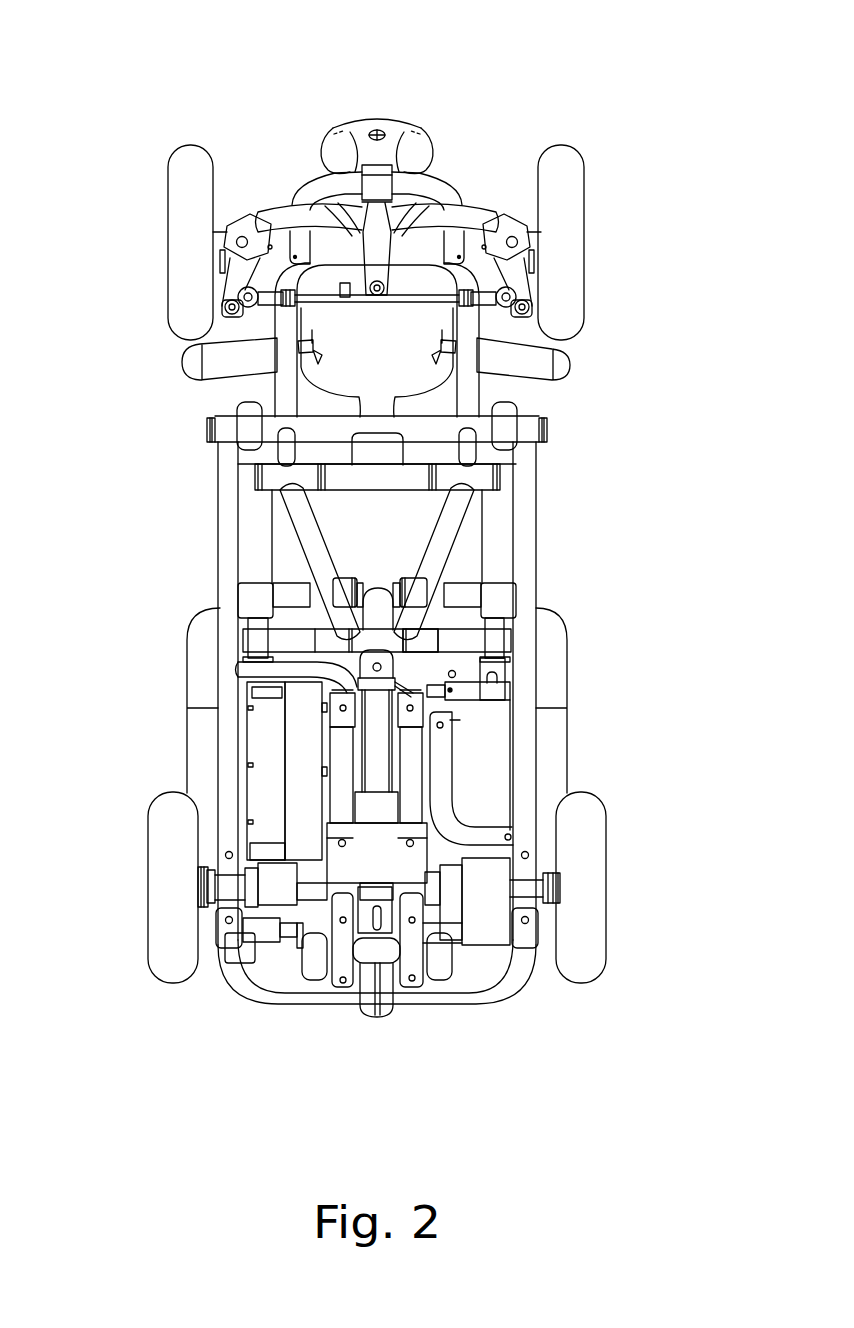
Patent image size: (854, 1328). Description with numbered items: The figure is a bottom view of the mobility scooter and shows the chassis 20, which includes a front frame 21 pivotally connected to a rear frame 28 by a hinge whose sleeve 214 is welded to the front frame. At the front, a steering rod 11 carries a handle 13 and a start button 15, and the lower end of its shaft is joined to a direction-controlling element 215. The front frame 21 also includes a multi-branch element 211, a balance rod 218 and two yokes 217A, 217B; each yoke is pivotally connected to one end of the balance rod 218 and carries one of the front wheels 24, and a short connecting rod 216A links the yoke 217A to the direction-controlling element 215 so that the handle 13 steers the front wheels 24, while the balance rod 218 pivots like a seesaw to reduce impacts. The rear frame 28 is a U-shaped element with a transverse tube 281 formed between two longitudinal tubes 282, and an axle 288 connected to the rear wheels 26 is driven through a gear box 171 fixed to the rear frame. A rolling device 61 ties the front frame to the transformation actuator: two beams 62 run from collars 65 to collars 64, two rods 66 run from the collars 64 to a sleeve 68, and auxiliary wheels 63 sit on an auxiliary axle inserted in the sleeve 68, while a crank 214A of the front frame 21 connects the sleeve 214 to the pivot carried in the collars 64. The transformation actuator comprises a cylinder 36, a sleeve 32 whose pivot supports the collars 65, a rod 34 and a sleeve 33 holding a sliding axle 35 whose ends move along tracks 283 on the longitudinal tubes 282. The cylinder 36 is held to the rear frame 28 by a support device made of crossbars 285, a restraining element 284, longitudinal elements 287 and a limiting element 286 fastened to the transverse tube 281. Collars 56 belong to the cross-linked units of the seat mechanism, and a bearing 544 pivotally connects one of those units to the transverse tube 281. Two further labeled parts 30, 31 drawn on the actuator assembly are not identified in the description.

The steering rod 11 is at (405, 126).
The start button 15 is at (377, 129).
The multi-branch element 211 is at (352, 180).
The balance rod 218 is at (420, 210).
The yoke 217A is at (250, 215).
The yoke 217B is at (507, 227).
The connecting rod 216A is at (353, 288).
The direction-controlling element 215 is at (440, 200).
The front wheels 24 is at (183, 238).
The handle 13 is at (567, 355).
The sleeve 68 is at (377, 418).
The auxiliary wheels 63 is at (510, 410).
The front frame 21 is at (360, 453).
The chassis 20 is at (333, 732).
The sleeve 214 is at (487, 440).
The rear frame 28 is at (340, 761).
The rods 66 is at (465, 453).
The rolling device 61 is at (280, 503).
The collars 64 is at (463, 480).
The crank 214A is at (375, 443).
The beams 62 is at (450, 532).
The longitudinal tubes 282 is at (227, 542).
The collars 56 is at (345, 590).
The sleeve 33 is at (388, 582).
The tracks 283 is at (498, 570).
The sliding axle 35 is at (290, 595).
The rod 34 is at (265, 612).
The sleeve 32 is at (255, 640).
The collars 65 is at (427, 643).
The restraining element 284 is at (340, 718).
The crossbars 285 is at (493, 710).
The longitudinal elements 287 is at (342, 768).
The actuator rod 31 is at (382, 755).
The actuator 30 is at (413, 860).
The axle 288 is at (270, 888).
The gear box 171 is at (473, 893).
The rear wheels 26 is at (185, 952).
The bearing 544 is at (438, 957).
The cylinder 36 is at (327, 900).
The limiting element 286 is at (353, 977).
The transverse tube 281 is at (438, 996).